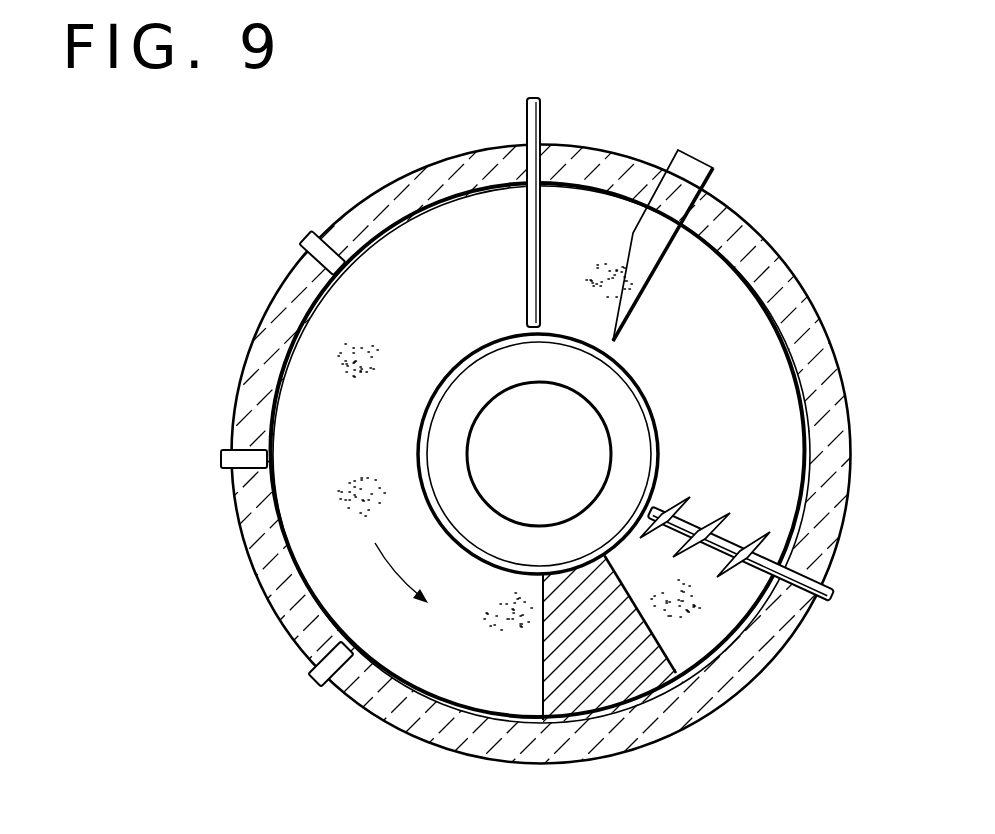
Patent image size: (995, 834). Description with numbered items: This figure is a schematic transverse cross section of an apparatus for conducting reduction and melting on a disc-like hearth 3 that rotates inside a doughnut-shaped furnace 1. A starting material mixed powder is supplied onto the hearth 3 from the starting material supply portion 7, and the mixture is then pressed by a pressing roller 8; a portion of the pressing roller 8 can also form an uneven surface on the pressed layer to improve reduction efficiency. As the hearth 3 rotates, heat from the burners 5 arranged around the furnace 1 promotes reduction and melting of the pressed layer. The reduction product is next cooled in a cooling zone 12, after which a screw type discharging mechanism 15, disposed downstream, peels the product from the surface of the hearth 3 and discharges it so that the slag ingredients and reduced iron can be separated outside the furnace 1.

The doughnut-shaped furnace 1 is at (262, 333).
The disc-like hearth 3 is at (777, 378).
The burners 5 is at (222, 458).
The starting material supply portion 7 is at (694, 160).
The pressing roller 8 is at (542, 127).
The cooling zone 12 is at (650, 670).
The screw type discharging mechanism 15 is at (826, 618).